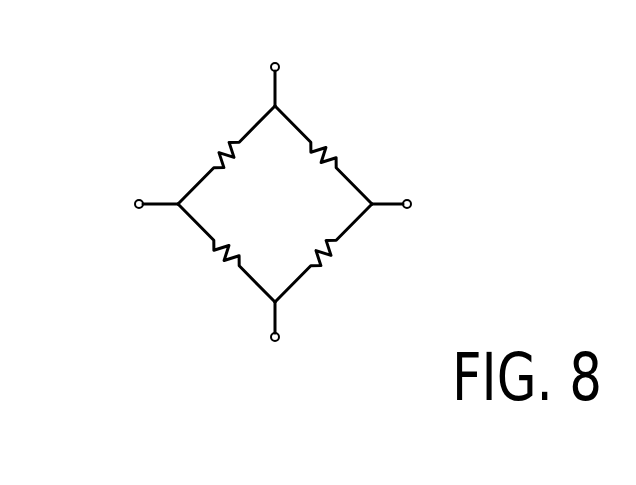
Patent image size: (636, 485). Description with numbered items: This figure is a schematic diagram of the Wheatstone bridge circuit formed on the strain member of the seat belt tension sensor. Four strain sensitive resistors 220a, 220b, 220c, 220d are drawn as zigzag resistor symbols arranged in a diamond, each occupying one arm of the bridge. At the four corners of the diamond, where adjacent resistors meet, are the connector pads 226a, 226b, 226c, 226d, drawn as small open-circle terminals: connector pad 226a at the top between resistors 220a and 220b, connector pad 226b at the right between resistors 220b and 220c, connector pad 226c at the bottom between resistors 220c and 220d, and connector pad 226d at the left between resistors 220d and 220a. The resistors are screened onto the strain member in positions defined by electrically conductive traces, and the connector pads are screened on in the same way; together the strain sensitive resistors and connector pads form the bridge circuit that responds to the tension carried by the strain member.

The strain sensitive resistor 220a is at (206, 155).
The strain sensitive resistor 220b is at (336, 149).
The strain sensitive resistor 220c is at (346, 255).
The strain sensitive resistor 220d is at (208, 257).
The connector pad 226a is at (274, 62).
The connector pad 226b is at (436, 204).
The connector pad 226c is at (276, 347).
The connector pad 226d is at (114, 207).